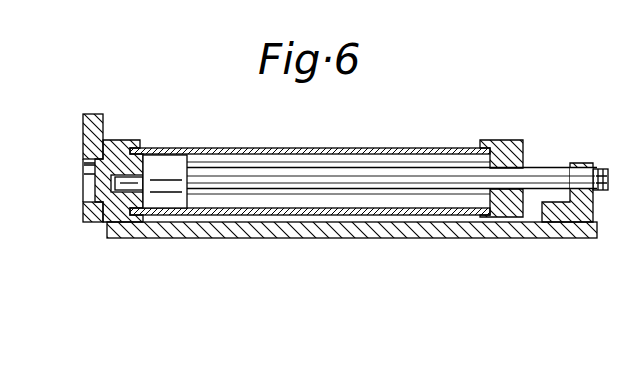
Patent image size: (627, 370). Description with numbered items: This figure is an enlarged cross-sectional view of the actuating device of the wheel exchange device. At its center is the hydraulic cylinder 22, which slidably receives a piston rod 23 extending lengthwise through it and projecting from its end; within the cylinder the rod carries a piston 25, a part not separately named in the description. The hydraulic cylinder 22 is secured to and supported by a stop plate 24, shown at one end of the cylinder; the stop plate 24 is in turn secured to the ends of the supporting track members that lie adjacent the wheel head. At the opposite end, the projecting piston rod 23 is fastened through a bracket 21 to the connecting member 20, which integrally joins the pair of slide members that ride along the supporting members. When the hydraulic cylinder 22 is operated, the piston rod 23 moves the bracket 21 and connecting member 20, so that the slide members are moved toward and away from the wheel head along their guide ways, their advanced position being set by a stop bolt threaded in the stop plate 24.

The connecting member 20 is at (307, 234).
The bracket 21 is at (585, 212).
The hydraulic cylinder 22 is at (393, 148).
The piston rod 23 is at (407, 180).
The stop plate 24 is at (93, 118).
The piston 25 is at (170, 165).